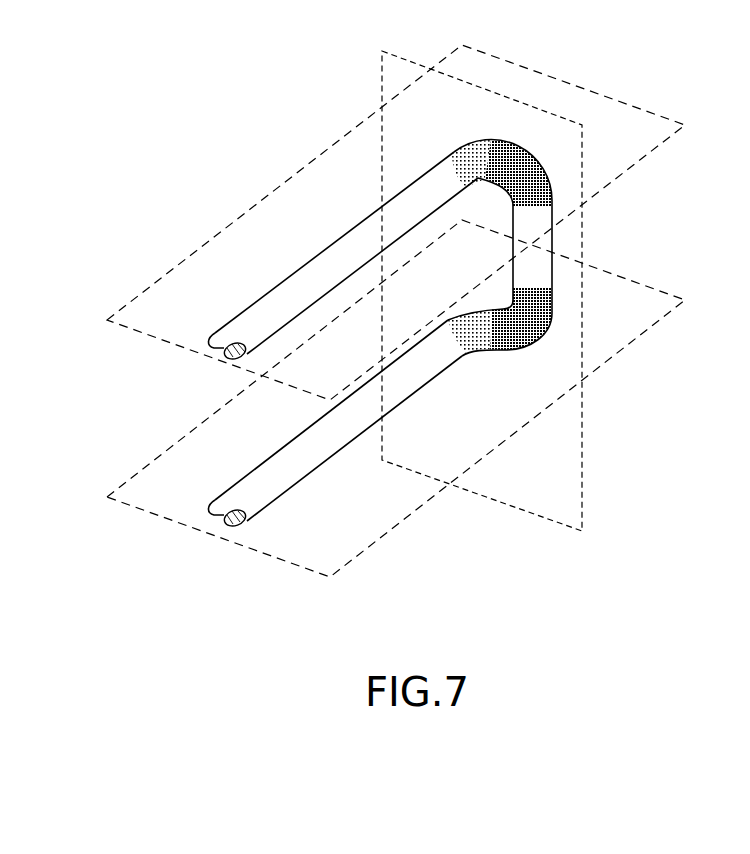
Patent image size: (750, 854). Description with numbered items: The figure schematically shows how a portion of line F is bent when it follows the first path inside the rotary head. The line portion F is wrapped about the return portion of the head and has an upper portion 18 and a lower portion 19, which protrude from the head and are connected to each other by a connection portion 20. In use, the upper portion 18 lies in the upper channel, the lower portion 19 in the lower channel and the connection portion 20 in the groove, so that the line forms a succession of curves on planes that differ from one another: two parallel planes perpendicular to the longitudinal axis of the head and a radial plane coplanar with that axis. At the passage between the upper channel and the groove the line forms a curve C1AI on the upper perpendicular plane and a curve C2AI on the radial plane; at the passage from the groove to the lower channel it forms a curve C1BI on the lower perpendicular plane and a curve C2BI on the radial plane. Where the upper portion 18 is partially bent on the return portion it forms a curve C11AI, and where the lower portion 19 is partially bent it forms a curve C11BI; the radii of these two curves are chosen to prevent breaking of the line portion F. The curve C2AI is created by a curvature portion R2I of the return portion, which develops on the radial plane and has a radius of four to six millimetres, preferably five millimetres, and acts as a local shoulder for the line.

The upper portion 18 is at (326, 256).
The lower portion 19 is at (332, 424).
The connection portion 20 is at (529, 244).
The curve C1A along path PI C1AI is at (463, 155).
The curve C2A along path PI C2AI is at (518, 157).
The curve C1B along path PI C1BI is at (493, 350).
The curve C2B along path PI C2BI is at (542, 330).
The curve C11A along path PI C11AI is at (411, 218).
The curve C11B along path PI C11BI is at (423, 372).
The curvature portion R2I is at (505, 203).
The portion of line F is at (207, 378).